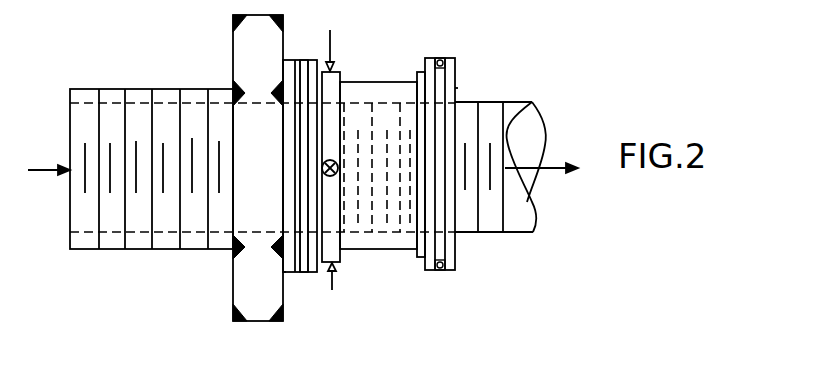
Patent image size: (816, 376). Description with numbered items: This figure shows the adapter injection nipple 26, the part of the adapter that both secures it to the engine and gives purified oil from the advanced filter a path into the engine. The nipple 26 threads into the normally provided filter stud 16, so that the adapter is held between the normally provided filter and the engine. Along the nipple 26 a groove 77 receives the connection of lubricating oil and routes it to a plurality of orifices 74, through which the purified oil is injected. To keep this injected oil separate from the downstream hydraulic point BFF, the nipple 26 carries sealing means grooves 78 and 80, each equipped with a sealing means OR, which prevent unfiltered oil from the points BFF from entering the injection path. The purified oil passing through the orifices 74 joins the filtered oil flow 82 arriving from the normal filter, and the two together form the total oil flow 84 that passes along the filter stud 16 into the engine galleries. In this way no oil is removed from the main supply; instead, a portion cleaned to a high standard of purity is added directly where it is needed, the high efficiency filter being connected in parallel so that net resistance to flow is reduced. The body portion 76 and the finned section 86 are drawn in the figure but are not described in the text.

The filter stud 16 is at (487, 233).
The adapter injection nipple 26 is at (232, 28).
The plurality of orifices 74 is at (343, 70).
The hub body 76 is at (365, 82).
The groove 77 is at (372, 250).
The sealing means groove 78 is at (303, 171).
The sealing means groove 80 is at (455, 255).
The filtered oil flow 82 is at (40, 172).
The total oil flow 84 is at (562, 172).
The finned cylinder 86 is at (148, 250).
The sealing means OR is at (303, 60).
The downstream hydraulic point BFF is at (458, 88).